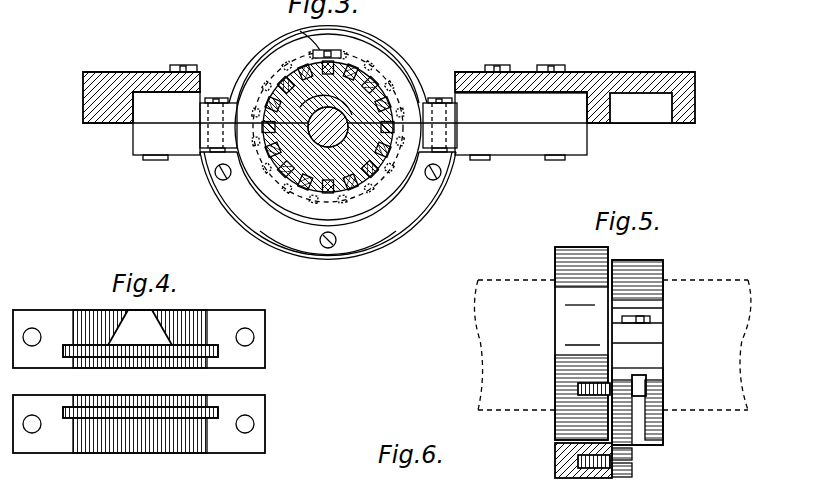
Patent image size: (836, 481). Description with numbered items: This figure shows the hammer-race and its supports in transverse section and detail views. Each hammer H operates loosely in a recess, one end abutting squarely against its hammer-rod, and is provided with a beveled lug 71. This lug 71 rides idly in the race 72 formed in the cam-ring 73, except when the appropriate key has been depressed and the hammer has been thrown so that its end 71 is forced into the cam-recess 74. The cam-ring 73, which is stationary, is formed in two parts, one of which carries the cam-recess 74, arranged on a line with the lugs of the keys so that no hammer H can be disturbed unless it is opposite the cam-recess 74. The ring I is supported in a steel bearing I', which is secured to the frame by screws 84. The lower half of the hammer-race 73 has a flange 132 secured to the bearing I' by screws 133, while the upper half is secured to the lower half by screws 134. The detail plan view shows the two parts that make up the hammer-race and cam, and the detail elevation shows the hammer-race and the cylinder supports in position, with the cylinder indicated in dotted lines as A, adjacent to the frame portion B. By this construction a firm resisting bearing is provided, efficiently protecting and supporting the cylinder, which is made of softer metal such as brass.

In FIG. 3, the beveled lug 71 is at (300, 31).
In FIG. 3, the cam-recess 74 is at (332, 52).
In FIG. 4, the cam-recess 74 is at (140, 327).
In FIG. 3, the screws 84 is at (355, 60).
In FIG. 3, the screws 134 is at (211, 98).
In FIG. 5, the screws 134 is at (650, 320).
In FIG. 3, the screws 133 is at (225, 181).
In FIG. 5, the screws 133 is at (641, 463).
In FIG. 3, the flange 132 is at (340, 250).
In FIG. 5, the flange 132 is at (650, 443).
In FIG. 4, the cam-ring 73 is at (151, 381).
In FIG. 5, the cam-ring 73 is at (664, 274).
In FIG. 4, the race 72 is at (218, 352).
In FIG. 3, the hammer H is at (292, 80).
In FIG. 3, the ring I is at (328, 64).
In FIG. 5, the ring I is at (582, 343).
In FIG. 3, the steel bearing I' is at (328, 220).
In FIG. 5, the steel bearing I' is at (572, 460).
In FIG. 3, the rotor A is at (394, 131).
In FIG. 5, the rotor A is at (612, 345).
In FIG. 3, the bar B is at (620, 71).